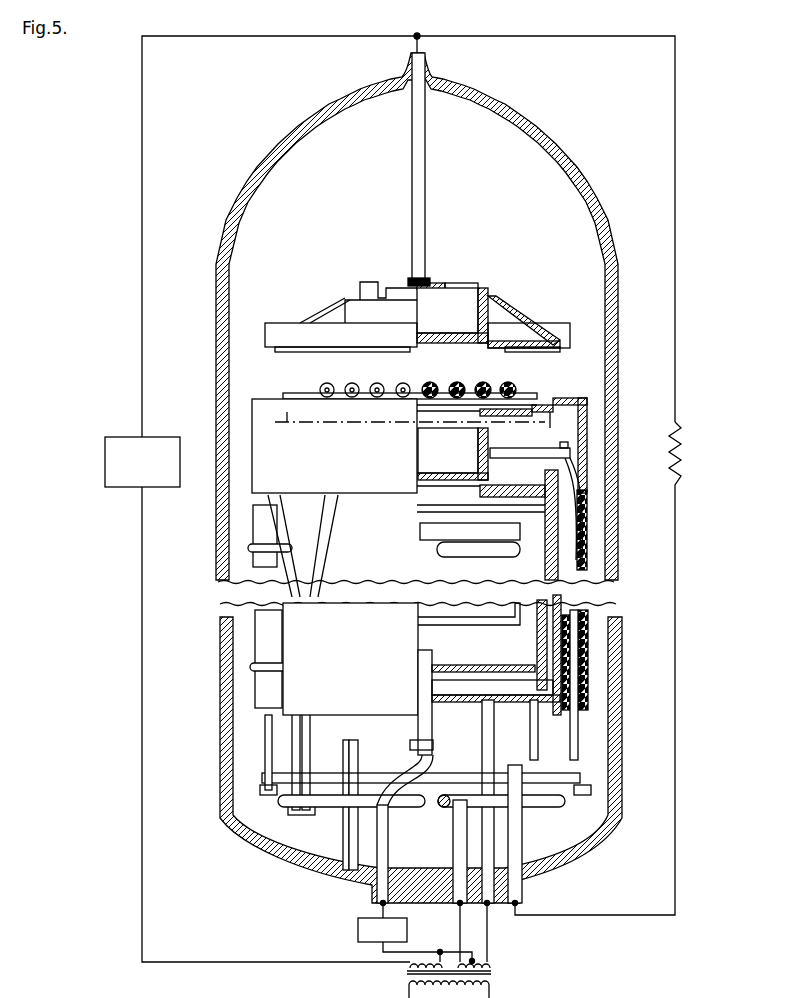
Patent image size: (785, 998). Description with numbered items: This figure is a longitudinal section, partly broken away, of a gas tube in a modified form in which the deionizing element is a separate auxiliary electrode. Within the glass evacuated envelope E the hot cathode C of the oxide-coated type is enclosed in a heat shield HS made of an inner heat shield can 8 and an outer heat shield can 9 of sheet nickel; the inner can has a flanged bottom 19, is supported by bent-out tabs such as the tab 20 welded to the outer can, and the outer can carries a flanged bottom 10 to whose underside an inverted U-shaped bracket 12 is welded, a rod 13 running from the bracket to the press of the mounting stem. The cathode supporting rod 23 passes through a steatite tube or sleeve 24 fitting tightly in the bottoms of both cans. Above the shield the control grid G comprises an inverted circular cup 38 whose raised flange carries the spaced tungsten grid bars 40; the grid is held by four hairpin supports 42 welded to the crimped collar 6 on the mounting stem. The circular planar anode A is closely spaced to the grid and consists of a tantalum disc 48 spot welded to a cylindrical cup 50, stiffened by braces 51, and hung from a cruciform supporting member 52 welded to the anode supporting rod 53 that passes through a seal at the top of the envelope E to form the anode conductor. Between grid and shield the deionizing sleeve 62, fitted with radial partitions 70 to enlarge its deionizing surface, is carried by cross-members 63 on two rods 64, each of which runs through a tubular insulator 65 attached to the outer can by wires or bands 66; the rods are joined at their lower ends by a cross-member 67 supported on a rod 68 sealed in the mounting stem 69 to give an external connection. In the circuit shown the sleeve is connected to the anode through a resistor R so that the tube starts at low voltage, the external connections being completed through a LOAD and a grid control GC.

The anode supporting rod 53 is at (425, 192).
The cruciform supporting member 52 is at (432, 284).
The braces 51 is at (326, 315).
The cylindrical cup 50 is at (478, 313).
The tantalum disc 48 is at (280, 330).
The anode A is at (548, 328).
The envelope E is at (613, 312).
The grid bars 40 is at (425, 388).
The control grid G is at (574, 400).
The crimped collar 6 is at (415, 426).
The inverted circular cup 38 is at (262, 465).
The radial partitions 70 is at (453, 454).
The deionizing sleeve 62 is at (530, 441).
The cross-members 63 is at (534, 447).
The tab 20 is at (545, 515).
The hot cathode C is at (508, 540).
The wires or bands 66 is at (250, 548).
The hairpin supports 42 is at (297, 540).
The outer heat shield can 9 is at (558, 602).
The tubular insulator 65 is at (262, 692).
The heat shield HS is at (285, 630).
The cathode supporting rod 23 is at (432, 638).
The flanged bottom 19 is at (466, 667).
The inner heat shield can 8 is at (538, 628).
The flanged bottom 10 is at (521, 703).
The tube or sleeve 24 is at (418, 724).
The bracket 12 is at (343, 752).
The rod 13 is at (358, 752).
The rods 64 is at (266, 744).
The cross-member 67 is at (455, 778).
The rod 68 is at (520, 838).
The mounting stem 69 is at (552, 855).
The load LOAD is at (390, 499).
The resistor R is at (606, 668).
The grid control GC is at (424, 950).